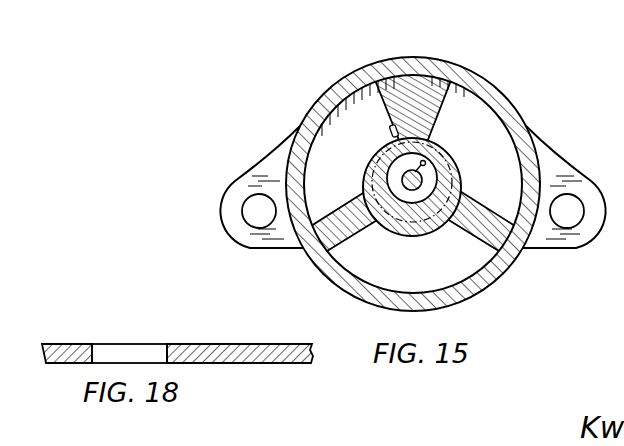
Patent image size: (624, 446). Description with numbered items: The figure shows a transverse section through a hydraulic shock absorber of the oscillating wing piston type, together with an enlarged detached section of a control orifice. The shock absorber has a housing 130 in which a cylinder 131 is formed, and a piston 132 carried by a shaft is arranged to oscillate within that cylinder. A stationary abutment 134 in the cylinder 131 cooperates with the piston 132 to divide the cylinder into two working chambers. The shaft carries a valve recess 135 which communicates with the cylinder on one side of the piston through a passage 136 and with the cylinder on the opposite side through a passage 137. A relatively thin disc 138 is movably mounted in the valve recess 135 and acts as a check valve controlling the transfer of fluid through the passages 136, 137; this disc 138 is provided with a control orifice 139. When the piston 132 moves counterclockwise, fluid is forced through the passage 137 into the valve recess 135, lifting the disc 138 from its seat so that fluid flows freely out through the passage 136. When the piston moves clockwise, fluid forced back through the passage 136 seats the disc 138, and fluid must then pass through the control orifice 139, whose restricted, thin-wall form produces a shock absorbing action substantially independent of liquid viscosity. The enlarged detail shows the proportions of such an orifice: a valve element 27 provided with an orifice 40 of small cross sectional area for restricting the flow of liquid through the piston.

In FIG. 15, the housing 130 is at (498, 105).
In FIG. 15, the cylinder 131 is at (466, 88).
In FIG. 15, the piston 132 is at (437, 78).
In FIG. 15, the stationary abutment 134 is at (344, 230).
In FIG. 15, the valve recess 135 is at (433, 170).
In FIG. 15, the passage 136 is at (432, 137).
In FIG. 15, the passage 137 is at (393, 131).
In FIG. 15, the disc 138 is at (430, 183).
In FIG. 15, the control orifice 139 is at (420, 163).
In FIG. 18, the valve element 27 is at (72, 343).
In FIG. 18, the orifice 40 is at (141, 350).